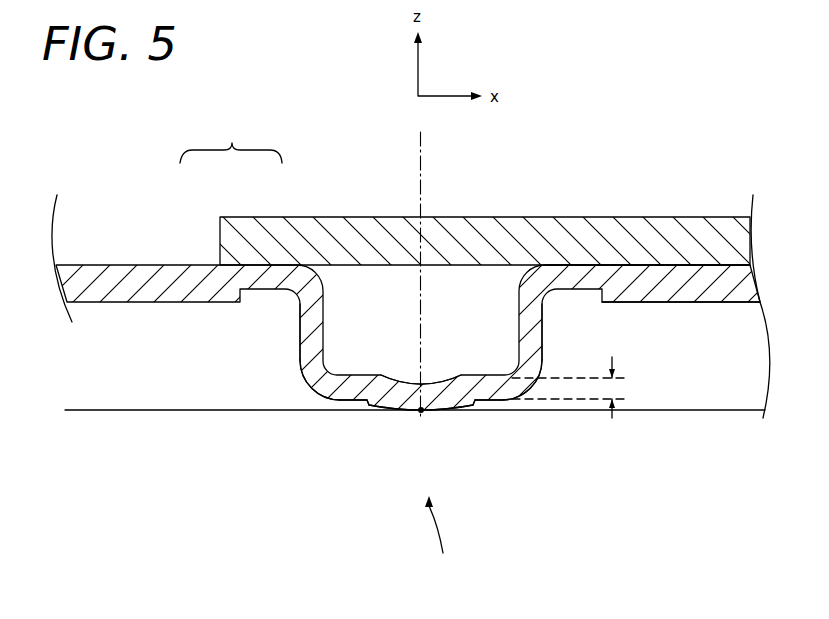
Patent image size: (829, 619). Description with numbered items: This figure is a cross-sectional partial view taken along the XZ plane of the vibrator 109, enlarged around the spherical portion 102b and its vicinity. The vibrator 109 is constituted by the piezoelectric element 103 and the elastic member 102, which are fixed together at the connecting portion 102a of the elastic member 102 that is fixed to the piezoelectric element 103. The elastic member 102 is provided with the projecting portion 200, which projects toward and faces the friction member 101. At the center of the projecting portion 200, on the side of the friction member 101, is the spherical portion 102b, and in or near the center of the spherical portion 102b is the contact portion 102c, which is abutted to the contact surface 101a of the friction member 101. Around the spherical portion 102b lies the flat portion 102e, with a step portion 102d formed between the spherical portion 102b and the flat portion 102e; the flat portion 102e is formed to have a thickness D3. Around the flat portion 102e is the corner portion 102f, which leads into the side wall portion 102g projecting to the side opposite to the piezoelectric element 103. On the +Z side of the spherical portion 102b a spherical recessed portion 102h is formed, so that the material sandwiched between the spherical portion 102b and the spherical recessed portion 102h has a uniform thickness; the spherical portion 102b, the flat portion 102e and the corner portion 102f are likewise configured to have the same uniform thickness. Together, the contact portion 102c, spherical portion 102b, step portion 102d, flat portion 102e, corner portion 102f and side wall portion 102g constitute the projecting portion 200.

The friction member 101 is at (93, 322).
The contact surface 101a is at (147, 322).
The elastic member 102 is at (201, 265).
The connecting portion 102a is at (643, 283).
The spherical portion 102b is at (388, 412).
The contact portion 102c is at (424, 414).
The step portion 102d is at (365, 401).
The flat portion 102e is at (343, 400).
The corner portion 102f is at (318, 392).
The side wall portion 102g is at (300, 340).
The spherical recessed portion 102h is at (422, 377).
The piezoelectric element 103 is at (258, 230).
The vibrator 109 is at (231, 138).
The thickness D3 is at (629, 395).
The projecting portion 200 is at (442, 539).